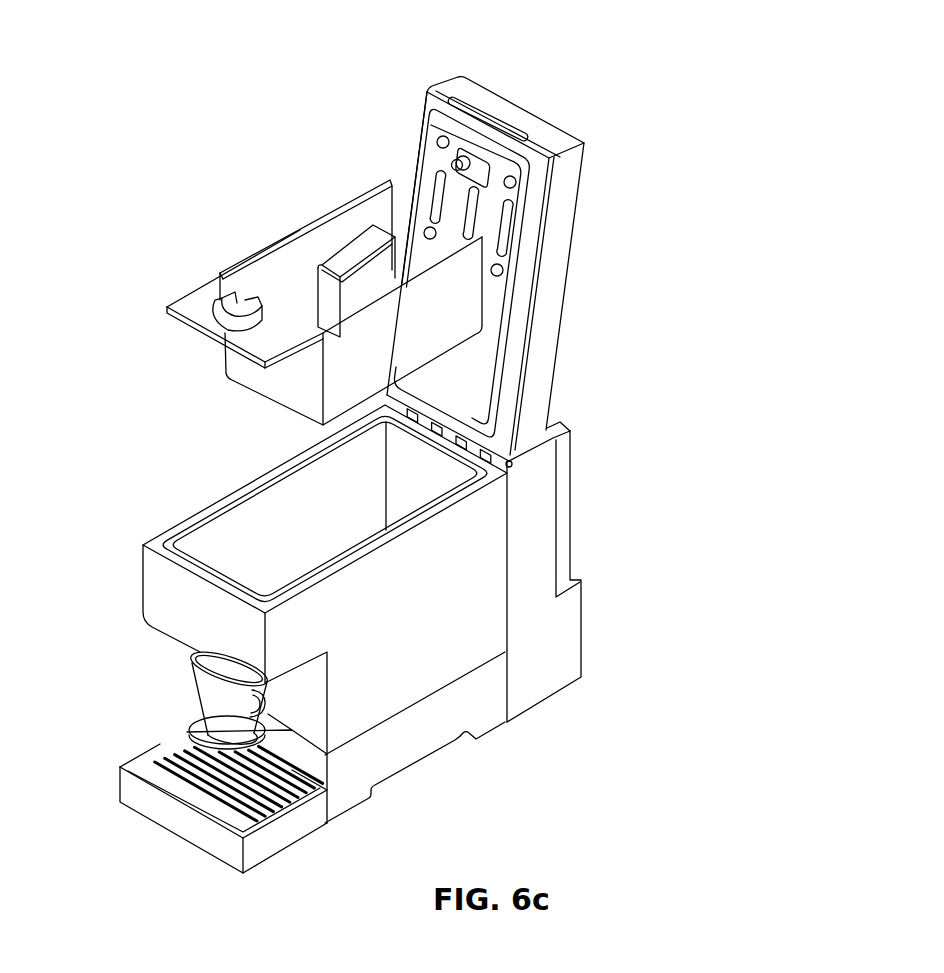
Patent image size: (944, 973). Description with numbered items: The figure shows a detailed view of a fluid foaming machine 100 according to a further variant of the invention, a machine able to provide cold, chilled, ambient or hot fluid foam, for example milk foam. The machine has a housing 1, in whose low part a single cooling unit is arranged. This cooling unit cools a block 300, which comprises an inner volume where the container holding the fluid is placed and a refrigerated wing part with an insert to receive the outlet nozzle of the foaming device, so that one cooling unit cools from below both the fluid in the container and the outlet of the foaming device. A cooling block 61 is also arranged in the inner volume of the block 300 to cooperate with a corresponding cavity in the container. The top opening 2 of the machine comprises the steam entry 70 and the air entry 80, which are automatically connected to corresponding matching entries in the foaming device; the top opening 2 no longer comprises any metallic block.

The housing 1 is at (490, 585).
The top opening 2 is at (572, 203).
The cooling block 61 is at (328, 279).
The steam entry 70 is at (457, 153).
The air entry 80 is at (433, 221).
The fluid foaming machine 100 is at (663, 423).
The block 300 is at (280, 241).